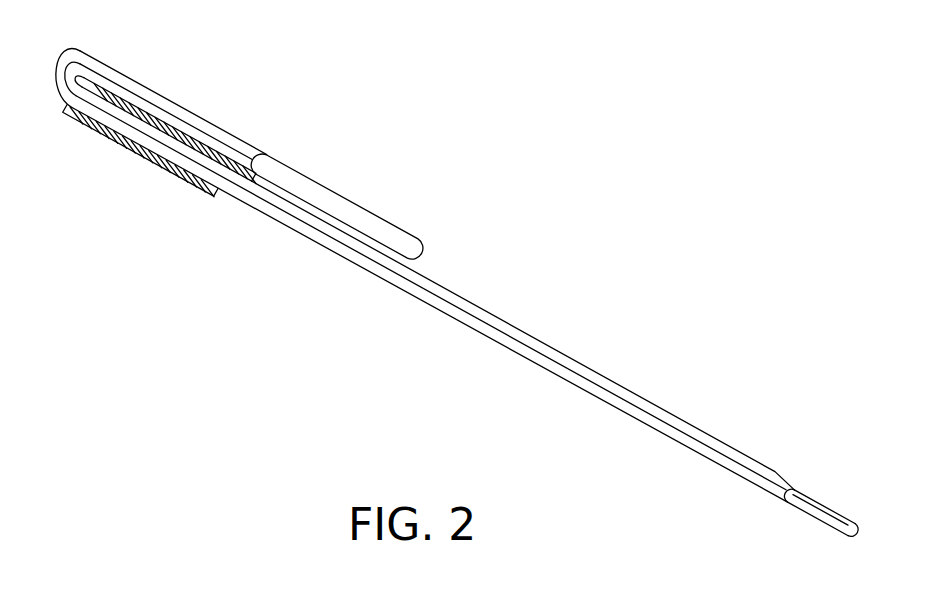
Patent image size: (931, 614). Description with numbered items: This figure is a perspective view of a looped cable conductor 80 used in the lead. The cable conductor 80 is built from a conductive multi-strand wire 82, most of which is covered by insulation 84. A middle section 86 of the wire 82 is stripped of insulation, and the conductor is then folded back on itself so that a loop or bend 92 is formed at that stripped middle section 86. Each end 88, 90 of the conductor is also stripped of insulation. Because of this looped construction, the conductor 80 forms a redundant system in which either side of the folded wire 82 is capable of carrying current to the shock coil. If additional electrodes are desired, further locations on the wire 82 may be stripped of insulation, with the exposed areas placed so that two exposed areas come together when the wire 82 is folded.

The cable conductor 80 is at (566, 269).
The conductive multi-strand wire 82 is at (808, 517).
The insulation 84 is at (681, 421).
The middle section of the wire 86 is at (828, 502).
The end of the conductor 88 is at (56, 80).
The end of the conductor 90 is at (73, 47).
The loop or bend 92 is at (850, 533).